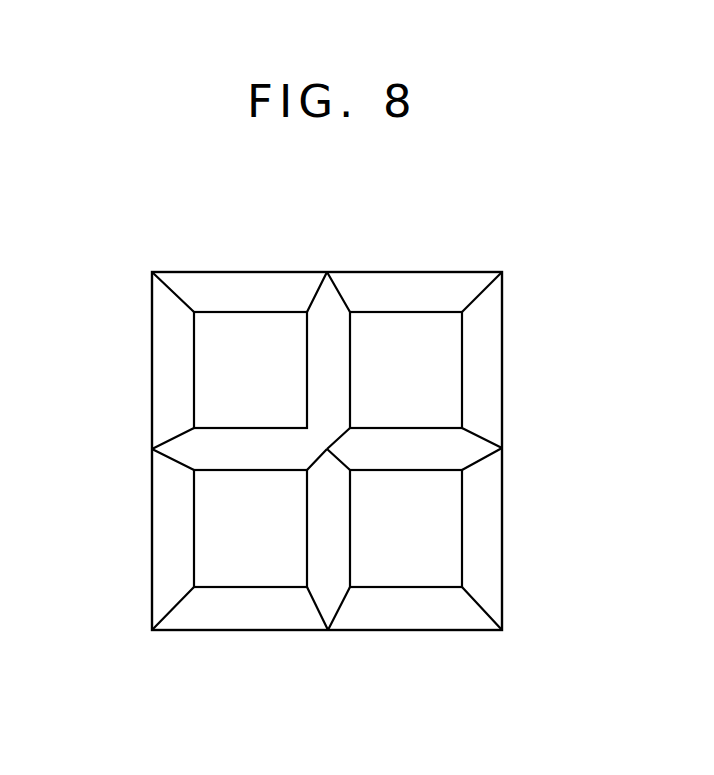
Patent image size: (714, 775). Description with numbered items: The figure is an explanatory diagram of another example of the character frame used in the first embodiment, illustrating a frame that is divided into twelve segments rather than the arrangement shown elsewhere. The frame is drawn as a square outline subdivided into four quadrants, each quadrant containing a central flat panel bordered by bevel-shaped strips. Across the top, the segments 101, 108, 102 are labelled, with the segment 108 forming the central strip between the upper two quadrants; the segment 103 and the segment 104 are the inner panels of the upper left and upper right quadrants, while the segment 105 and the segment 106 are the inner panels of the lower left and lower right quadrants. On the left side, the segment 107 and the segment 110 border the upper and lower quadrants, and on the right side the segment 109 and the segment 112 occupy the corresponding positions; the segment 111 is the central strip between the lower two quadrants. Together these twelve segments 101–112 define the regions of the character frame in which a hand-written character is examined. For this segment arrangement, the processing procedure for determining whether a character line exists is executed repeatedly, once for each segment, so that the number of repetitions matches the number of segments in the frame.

The segment 101 is at (212, 270).
The segment 102 is at (442, 270).
The segment 103 is at (241, 428).
The segment 104 is at (408, 427).
The segment 105 is at (248, 586).
The segment 106 is at (414, 585).
The segment 107 is at (152, 376).
The segment 108 is at (350, 375).
The segment 109 is at (502, 354).
The segment 110 is at (152, 565).
The segment 111 is at (350, 542).
The segment 112 is at (502, 542).